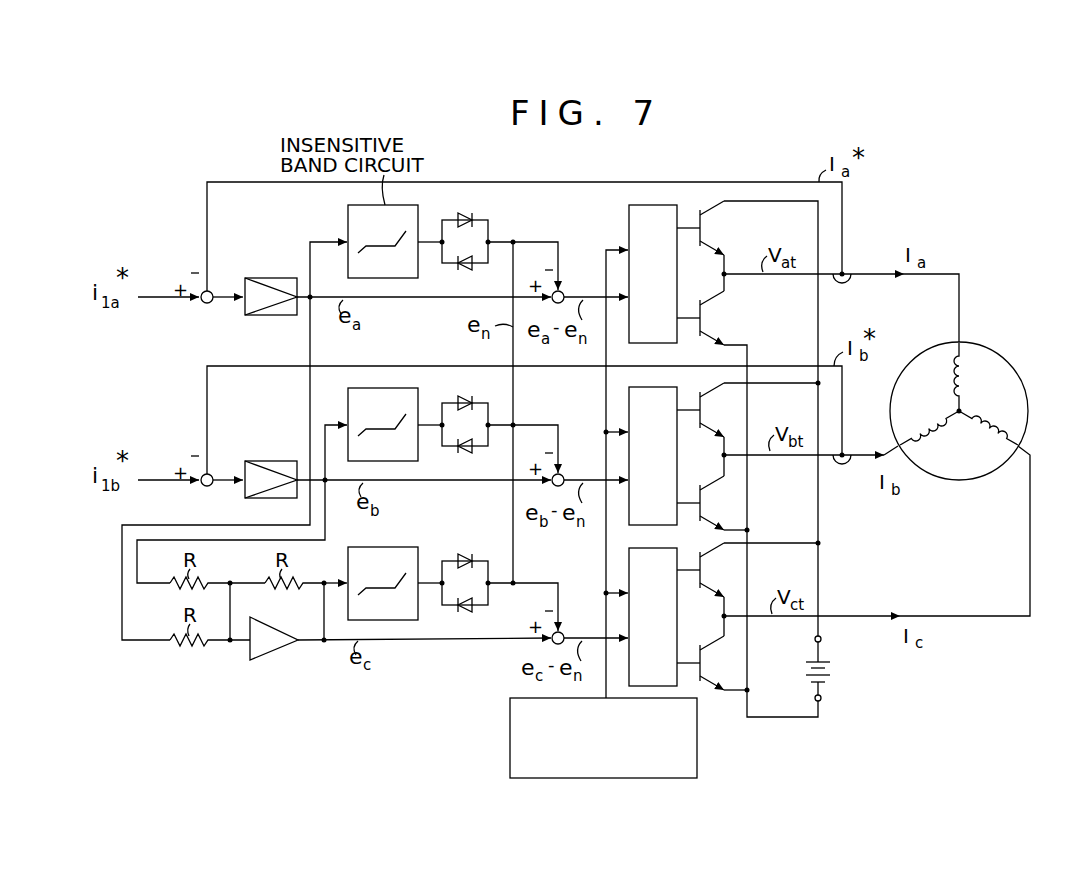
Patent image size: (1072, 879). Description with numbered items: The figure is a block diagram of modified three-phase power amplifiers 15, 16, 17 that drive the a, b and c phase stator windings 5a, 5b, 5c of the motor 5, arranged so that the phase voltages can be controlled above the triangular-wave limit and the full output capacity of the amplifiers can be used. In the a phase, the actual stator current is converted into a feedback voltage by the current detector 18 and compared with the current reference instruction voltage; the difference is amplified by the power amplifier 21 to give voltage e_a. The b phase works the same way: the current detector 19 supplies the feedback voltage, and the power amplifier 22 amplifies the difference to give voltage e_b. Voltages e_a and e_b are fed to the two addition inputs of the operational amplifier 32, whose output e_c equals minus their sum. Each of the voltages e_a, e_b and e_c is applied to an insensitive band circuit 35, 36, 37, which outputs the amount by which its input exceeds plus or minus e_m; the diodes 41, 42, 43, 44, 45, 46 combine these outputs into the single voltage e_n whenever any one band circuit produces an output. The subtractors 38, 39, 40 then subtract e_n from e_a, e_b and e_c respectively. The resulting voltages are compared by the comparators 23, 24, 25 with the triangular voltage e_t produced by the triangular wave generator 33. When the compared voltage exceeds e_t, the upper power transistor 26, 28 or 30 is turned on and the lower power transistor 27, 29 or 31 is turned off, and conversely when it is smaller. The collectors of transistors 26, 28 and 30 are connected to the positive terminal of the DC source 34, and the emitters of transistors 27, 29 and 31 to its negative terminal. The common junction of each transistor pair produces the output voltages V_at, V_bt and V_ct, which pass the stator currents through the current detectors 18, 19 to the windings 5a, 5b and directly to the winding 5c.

The motor 5 is at (1000, 355).
The a phase stator winding 5a is at (968, 376).
The b phase stator winding 5b is at (935, 423).
The c phase stator winding 5c is at (984, 439).
The power amplifier 15 is at (590, 215).
The power amplifier 16 is at (590, 398).
The power amplifier 17 is at (589, 571).
The current detector 18 is at (843, 284).
The current detector 19 is at (843, 465).
The power amplifier 21 is at (271, 278).
The power amplifier 22 is at (271, 461).
The comparator 23 is at (677, 272).
The comparator 24 is at (677, 455).
The comparator 25 is at (677, 617).
The power transistor 26 is at (743, 240).
The power transistor 27 is at (743, 330).
The power transistor 28 is at (743, 422).
The power transistor 29 is at (743, 515).
The power transistor 30 is at (743, 582).
The power transistor 31 is at (743, 675).
The operational amplifier 32 is at (279, 661).
The triangular wave generator 33 is at (510, 732).
The DC source 34 is at (832, 670).
The insensitive band circuit 35 is at (348, 221).
The insensitive band circuit 36 is at (348, 401).
The insensitive band circuit 37 is at (400, 547).
The subtractor 38 is at (566, 291).
The subtractor 39 is at (566, 474).
The subtractor 40 is at (566, 632).
The diode 41 is at (472, 208).
The diode 42 is at (462, 271).
The diode 43 is at (466, 399).
The diode 44 is at (462, 455).
The diode 45 is at (465, 554).
The diode 46 is at (462, 613).